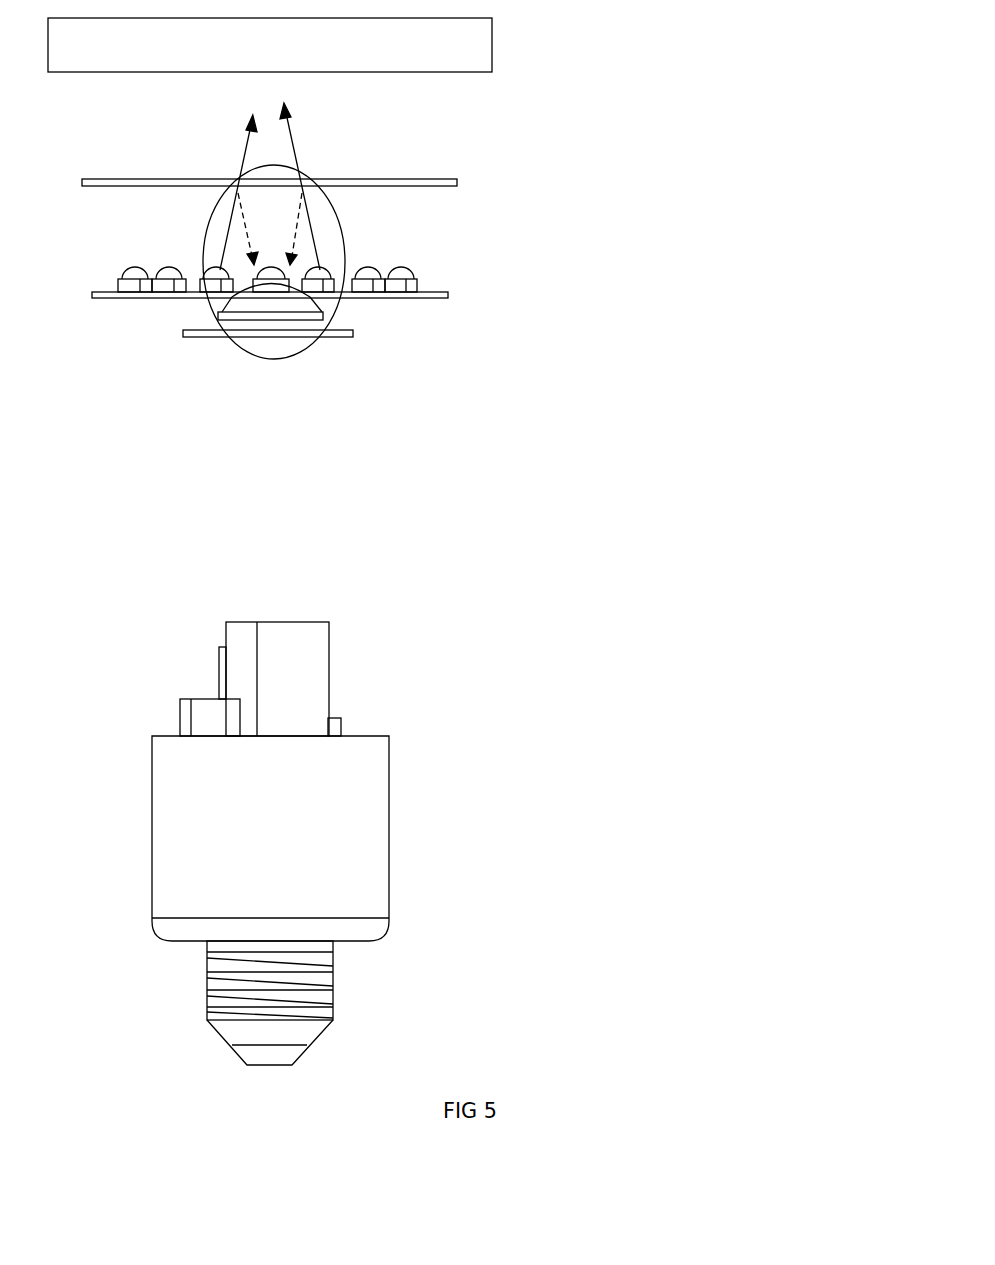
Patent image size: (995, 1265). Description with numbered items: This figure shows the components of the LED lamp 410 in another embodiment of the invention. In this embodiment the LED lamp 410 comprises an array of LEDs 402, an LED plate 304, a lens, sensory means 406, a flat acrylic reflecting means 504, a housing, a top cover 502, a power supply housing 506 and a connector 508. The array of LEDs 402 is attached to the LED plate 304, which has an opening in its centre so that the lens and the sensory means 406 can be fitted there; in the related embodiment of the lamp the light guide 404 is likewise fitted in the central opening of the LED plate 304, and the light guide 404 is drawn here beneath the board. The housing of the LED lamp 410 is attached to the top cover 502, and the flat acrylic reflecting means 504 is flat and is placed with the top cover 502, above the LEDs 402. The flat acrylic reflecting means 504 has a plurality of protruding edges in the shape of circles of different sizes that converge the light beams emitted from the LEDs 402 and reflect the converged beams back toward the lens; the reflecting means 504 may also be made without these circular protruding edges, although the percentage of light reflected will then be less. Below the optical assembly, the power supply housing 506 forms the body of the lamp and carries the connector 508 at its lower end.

The top cover 502 is at (447, 45).
The flat acrylic reflecting means 504 is at (457, 178).
The array of LEDs 402 is at (403, 275).
The LED plate 304 is at (375, 284).
The light guide 404 is at (275, 305).
The sensory means 406 is at (342, 337).
The power supply housing 506 is at (372, 811).
The connector 508 is at (300, 998).
The LED lamp 410 is at (700, 676).